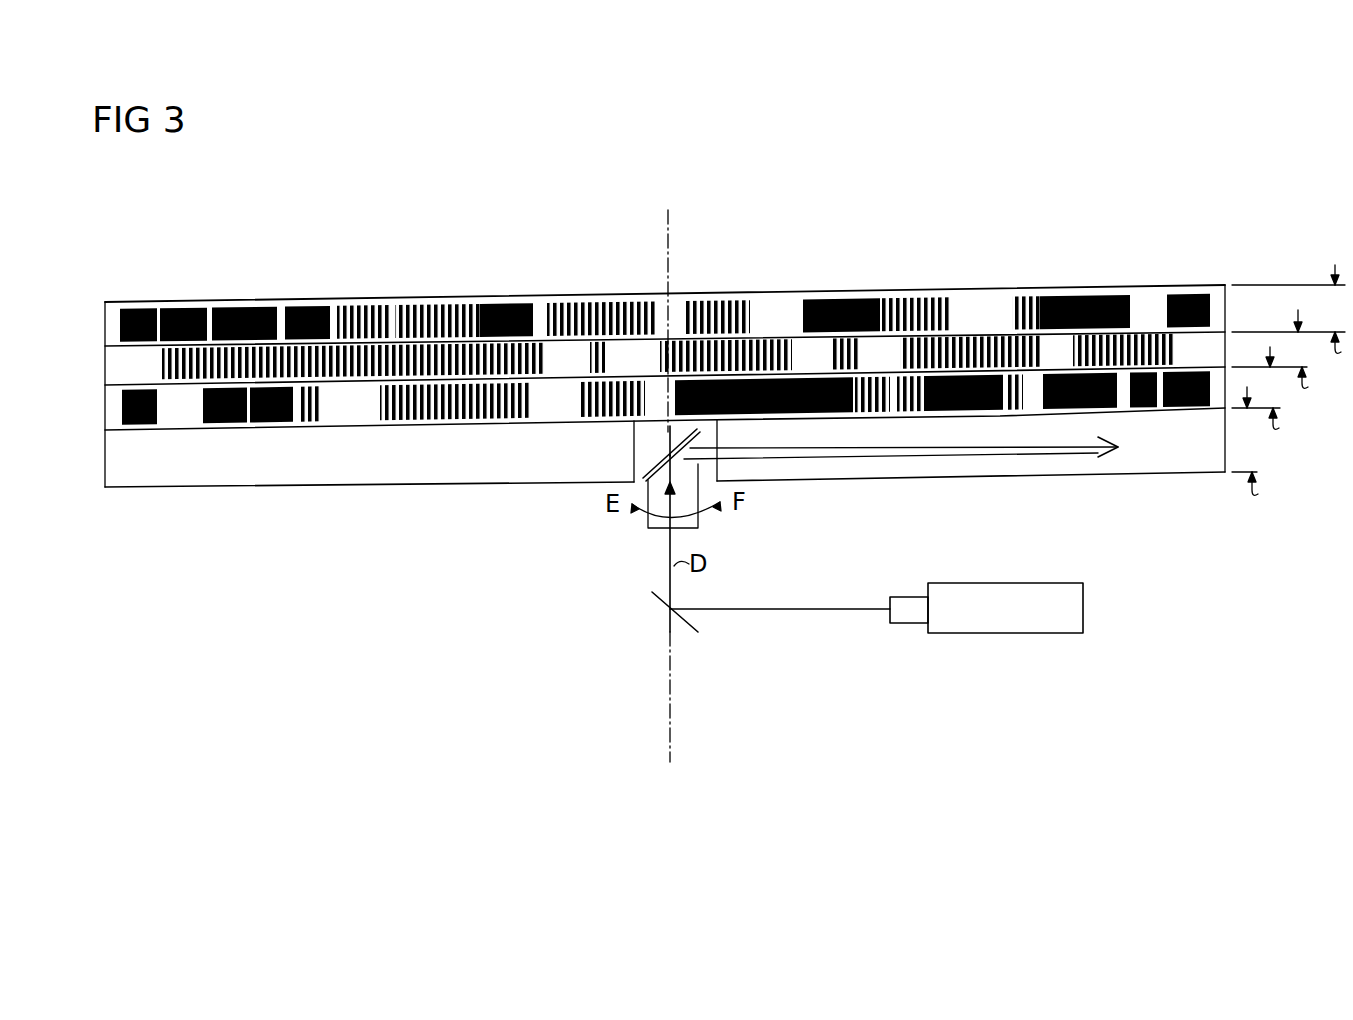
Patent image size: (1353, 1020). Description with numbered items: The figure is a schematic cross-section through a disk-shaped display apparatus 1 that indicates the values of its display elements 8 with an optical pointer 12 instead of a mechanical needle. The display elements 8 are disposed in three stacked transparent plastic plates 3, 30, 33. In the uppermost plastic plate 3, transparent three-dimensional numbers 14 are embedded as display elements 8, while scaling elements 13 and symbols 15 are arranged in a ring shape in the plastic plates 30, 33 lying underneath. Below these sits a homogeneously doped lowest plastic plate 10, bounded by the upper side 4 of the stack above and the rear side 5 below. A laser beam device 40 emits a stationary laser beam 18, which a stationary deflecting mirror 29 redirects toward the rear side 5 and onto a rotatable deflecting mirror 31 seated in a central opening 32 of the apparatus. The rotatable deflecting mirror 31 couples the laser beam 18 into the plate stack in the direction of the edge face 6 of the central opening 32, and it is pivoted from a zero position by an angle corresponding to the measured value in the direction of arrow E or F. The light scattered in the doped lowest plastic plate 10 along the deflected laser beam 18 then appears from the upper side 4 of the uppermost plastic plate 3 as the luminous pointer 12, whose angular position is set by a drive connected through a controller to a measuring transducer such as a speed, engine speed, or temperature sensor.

The display apparatus 1 is at (1068, 194).
The uppermost plastic plate 3 is at (1288, 298).
The upper side 4 is at (855, 283).
The rear side 5 is at (1030, 492).
The edge face 6 is at (90, 370).
The display elements 8 is at (541, 298).
The lowest plastic plate 10 is at (1255, 451).
The optical pointer 12 is at (921, 449).
The scaling elements 13 is at (164, 357).
The three-dimensional numbers 14 is at (312, 299).
The symbols 15 is at (298, 400).
The laser beam 18 is at (812, 611).
The stationary deflecting mirror 29 is at (668, 608).
The plastic plate 30 is at (1286, 349).
The rotatable deflecting mirror 31 is at (656, 462).
The central opening 32 is at (717, 438).
The plastic plate 33 is at (1270, 387).
The laser beam device 40 is at (1083, 608).